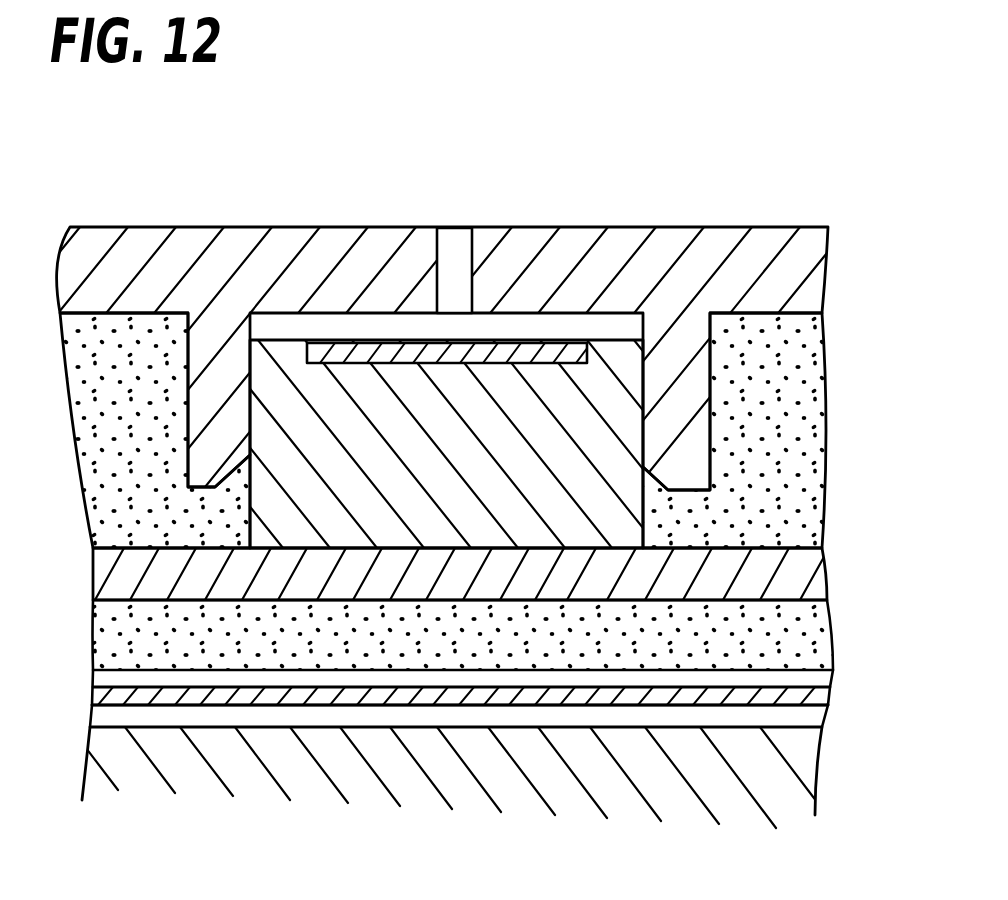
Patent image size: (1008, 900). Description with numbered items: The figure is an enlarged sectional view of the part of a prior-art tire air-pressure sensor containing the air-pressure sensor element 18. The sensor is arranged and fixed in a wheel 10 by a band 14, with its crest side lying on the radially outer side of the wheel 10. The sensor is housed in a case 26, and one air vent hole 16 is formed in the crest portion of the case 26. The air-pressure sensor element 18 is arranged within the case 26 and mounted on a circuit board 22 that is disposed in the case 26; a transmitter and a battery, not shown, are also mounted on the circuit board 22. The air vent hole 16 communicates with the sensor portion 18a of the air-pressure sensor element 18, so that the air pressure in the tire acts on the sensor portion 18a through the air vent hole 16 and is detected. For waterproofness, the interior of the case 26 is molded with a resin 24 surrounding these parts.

The wheel 10 is at (190, 770).
The band 14 is at (665, 708).
The air vent hole 16 is at (455, 245).
The air-pressure sensor element 18 is at (420, 512).
The sensor portion 18a is at (383, 348).
The circuit board 22 is at (790, 580).
The resin 24 is at (805, 500).
The case 26 is at (637, 265).